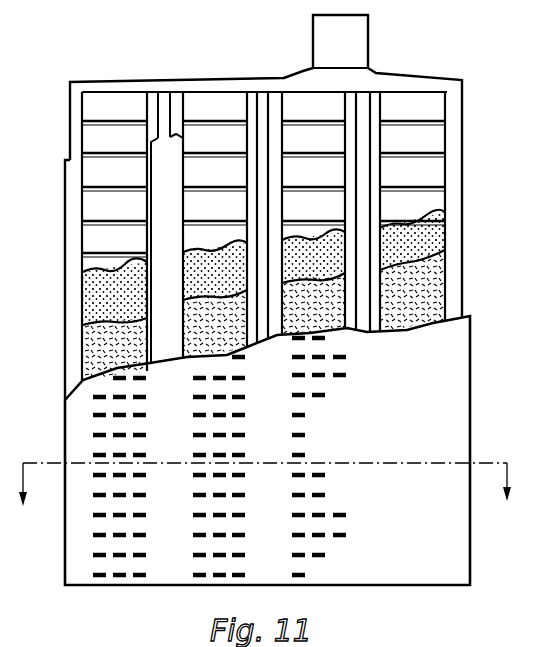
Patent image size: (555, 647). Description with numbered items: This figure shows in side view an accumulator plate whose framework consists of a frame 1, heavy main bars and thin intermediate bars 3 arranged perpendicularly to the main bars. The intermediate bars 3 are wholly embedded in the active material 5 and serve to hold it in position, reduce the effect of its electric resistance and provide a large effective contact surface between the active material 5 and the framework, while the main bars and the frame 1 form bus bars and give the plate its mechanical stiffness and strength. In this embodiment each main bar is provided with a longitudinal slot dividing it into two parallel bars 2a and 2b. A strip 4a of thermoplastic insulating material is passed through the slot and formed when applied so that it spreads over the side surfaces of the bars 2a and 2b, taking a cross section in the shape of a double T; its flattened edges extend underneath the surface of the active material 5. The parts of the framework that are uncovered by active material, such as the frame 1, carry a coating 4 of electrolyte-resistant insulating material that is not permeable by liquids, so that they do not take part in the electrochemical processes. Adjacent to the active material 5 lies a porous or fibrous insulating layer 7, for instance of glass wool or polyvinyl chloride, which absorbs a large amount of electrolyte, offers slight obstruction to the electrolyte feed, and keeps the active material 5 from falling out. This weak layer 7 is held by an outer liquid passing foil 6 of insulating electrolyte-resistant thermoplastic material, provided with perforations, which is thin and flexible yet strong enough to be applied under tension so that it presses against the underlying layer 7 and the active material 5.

The frame 1 is at (75, 125).
The parallel bar 2a is at (150, 95).
The parallel bar 2b is at (177, 98).
The intermediate bars 3 is at (215, 118).
The coating 4 is at (70, 200).
The strip 4a is at (153, 152).
The active material 5 is at (433, 227).
The outer liquid passing foil 6 is at (437, 372).
The layer 7 is at (435, 288).